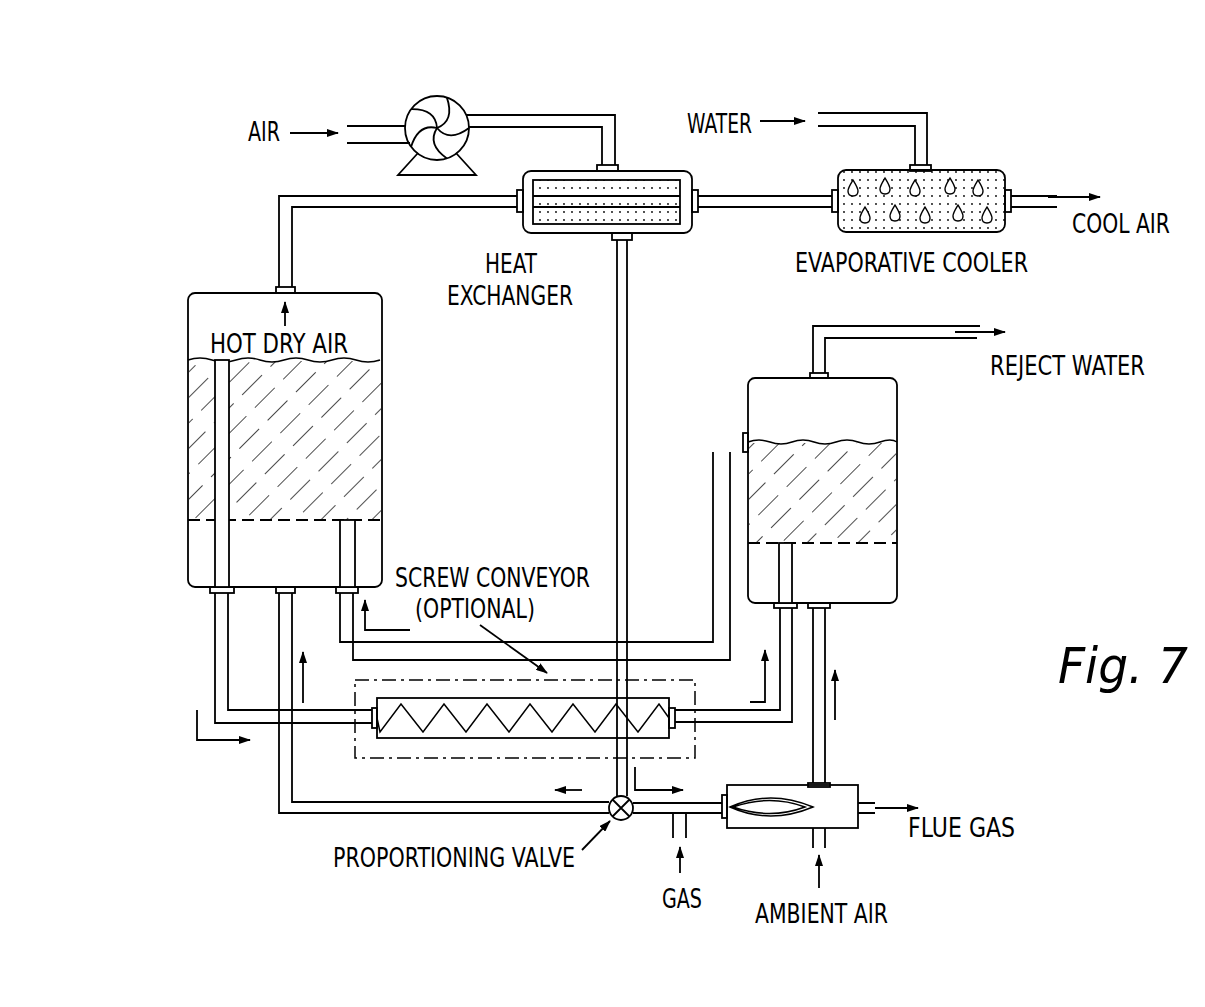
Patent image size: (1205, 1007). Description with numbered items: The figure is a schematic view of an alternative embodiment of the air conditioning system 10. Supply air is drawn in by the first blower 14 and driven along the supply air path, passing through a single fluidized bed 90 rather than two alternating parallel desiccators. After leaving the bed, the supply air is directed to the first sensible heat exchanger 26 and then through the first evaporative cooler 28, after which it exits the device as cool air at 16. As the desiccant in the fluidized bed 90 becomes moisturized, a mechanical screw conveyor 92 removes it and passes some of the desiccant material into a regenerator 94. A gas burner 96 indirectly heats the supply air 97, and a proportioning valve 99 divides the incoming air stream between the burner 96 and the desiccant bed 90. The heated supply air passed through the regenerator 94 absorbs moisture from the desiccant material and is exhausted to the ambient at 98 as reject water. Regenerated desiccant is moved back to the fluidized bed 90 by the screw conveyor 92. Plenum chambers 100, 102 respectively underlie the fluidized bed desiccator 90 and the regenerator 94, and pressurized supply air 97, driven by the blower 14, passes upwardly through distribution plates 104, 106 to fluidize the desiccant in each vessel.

The air conditioning system 10 is at (1030, 150).
The first blower 14 is at (463, 100).
The supply air exit 16 is at (1075, 193).
The first sensible heat exchanger 26 is at (643, 167).
The first evaporative cooler 28 is at (963, 170).
The single fluidized bed 90 is at (188, 425).
The mechanical screw conveyor 92 is at (644, 697).
The regenerator 94 is at (897, 485).
The gas burner 96 is at (848, 785).
The supply air 97 is at (630, 372).
The exhaust to ambient 98 is at (925, 325).
The proportioning valve 99 is at (621, 820).
The plenum chamber 100 is at (200, 563).
The plenum chamber 102 is at (880, 577).
The distribution plate 104 is at (312, 520).
The distribution plate 106 is at (858, 545).